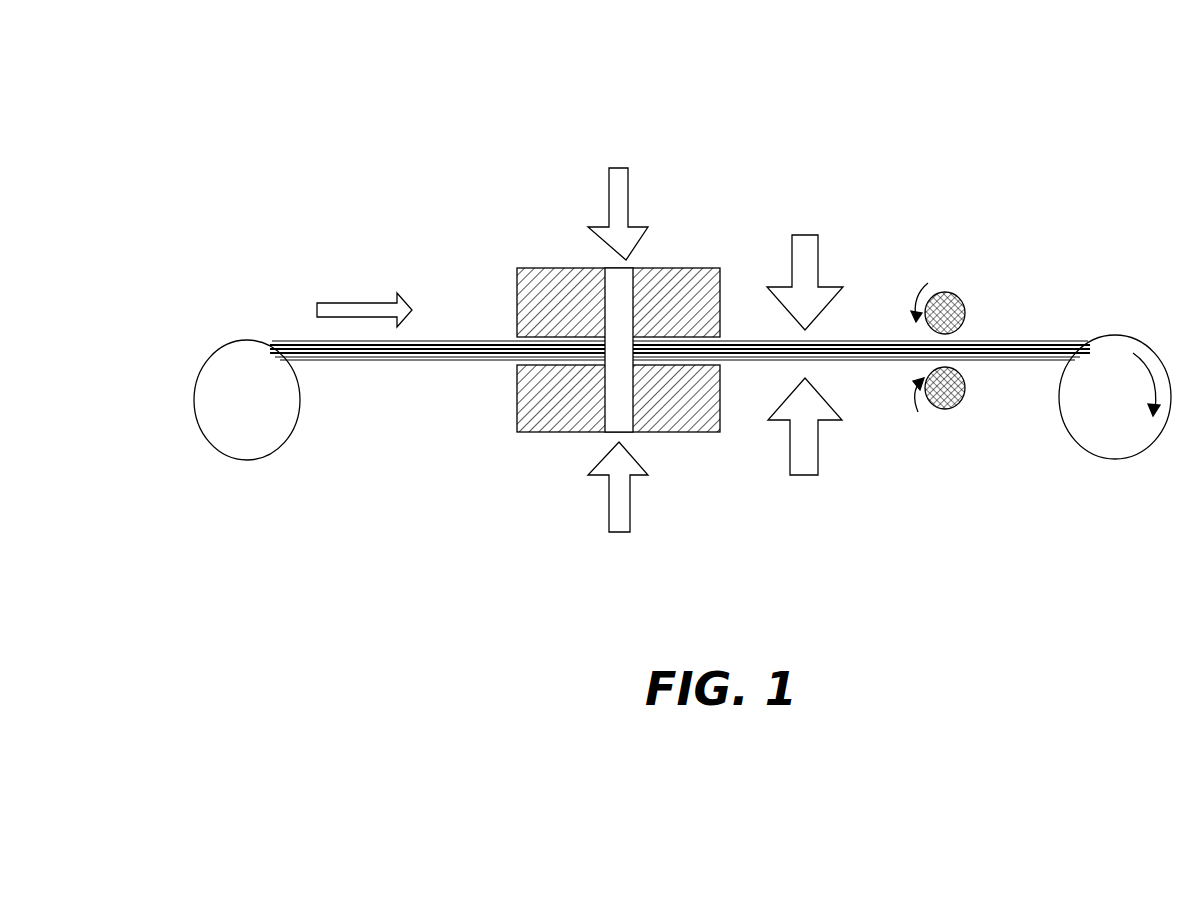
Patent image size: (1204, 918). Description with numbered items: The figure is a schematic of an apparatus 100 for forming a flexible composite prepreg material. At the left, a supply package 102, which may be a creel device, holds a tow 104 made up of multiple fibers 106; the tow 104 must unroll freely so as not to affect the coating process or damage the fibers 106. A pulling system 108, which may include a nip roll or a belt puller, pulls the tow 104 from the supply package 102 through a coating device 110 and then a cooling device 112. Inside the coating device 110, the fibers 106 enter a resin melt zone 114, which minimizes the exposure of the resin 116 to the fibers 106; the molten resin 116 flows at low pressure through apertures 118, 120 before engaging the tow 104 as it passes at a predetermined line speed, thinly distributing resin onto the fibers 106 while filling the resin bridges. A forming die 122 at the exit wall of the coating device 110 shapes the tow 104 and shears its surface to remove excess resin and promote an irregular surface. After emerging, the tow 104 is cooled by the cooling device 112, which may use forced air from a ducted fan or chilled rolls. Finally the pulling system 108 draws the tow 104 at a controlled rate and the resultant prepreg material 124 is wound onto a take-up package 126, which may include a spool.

The apparatus 100 is at (636, 104).
The supply package 102 is at (225, 351).
The tow 104 is at (663, 299).
The fibers 106 is at (382, 294).
The pulling system 108 is at (974, 353).
The coating device 110 is at (586, 305).
The cooling device 112 is at (834, 353).
The resin melt zone 114 is at (535, 412).
The resin 116 is at (566, 354).
The aperture 118 is at (648, 218).
The aperture 120 is at (651, 482).
The forming die 122 is at (755, 256).
The prepreg material 124 is at (1078, 279).
The take-up package 126 is at (1121, 341).